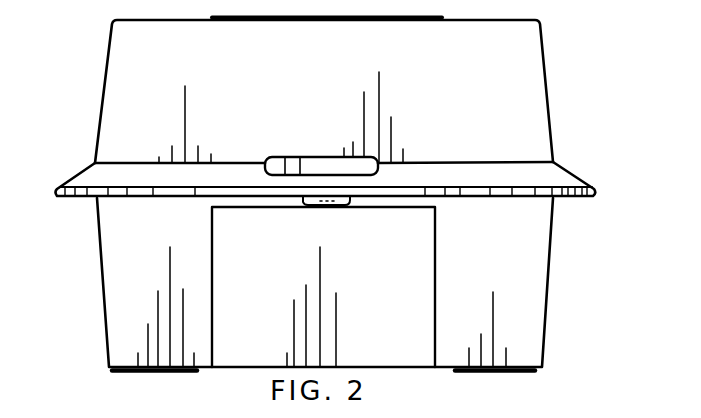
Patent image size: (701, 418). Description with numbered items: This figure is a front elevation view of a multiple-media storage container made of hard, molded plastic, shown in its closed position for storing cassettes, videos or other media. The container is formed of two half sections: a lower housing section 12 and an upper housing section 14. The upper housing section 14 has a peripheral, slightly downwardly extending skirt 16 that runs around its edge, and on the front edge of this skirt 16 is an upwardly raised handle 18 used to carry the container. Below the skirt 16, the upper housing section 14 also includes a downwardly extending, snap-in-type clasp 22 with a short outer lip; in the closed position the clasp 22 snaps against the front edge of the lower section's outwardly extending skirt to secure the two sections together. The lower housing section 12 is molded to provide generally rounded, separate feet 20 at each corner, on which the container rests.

The lower housing section 12 is at (404, 292).
The upper housing section 14 is at (299, 101).
The skirt 16 is at (558, 162).
The handle 18 is at (297, 158).
The feet 20 is at (178, 373).
The snap-in-type clasp 22 is at (349, 199).